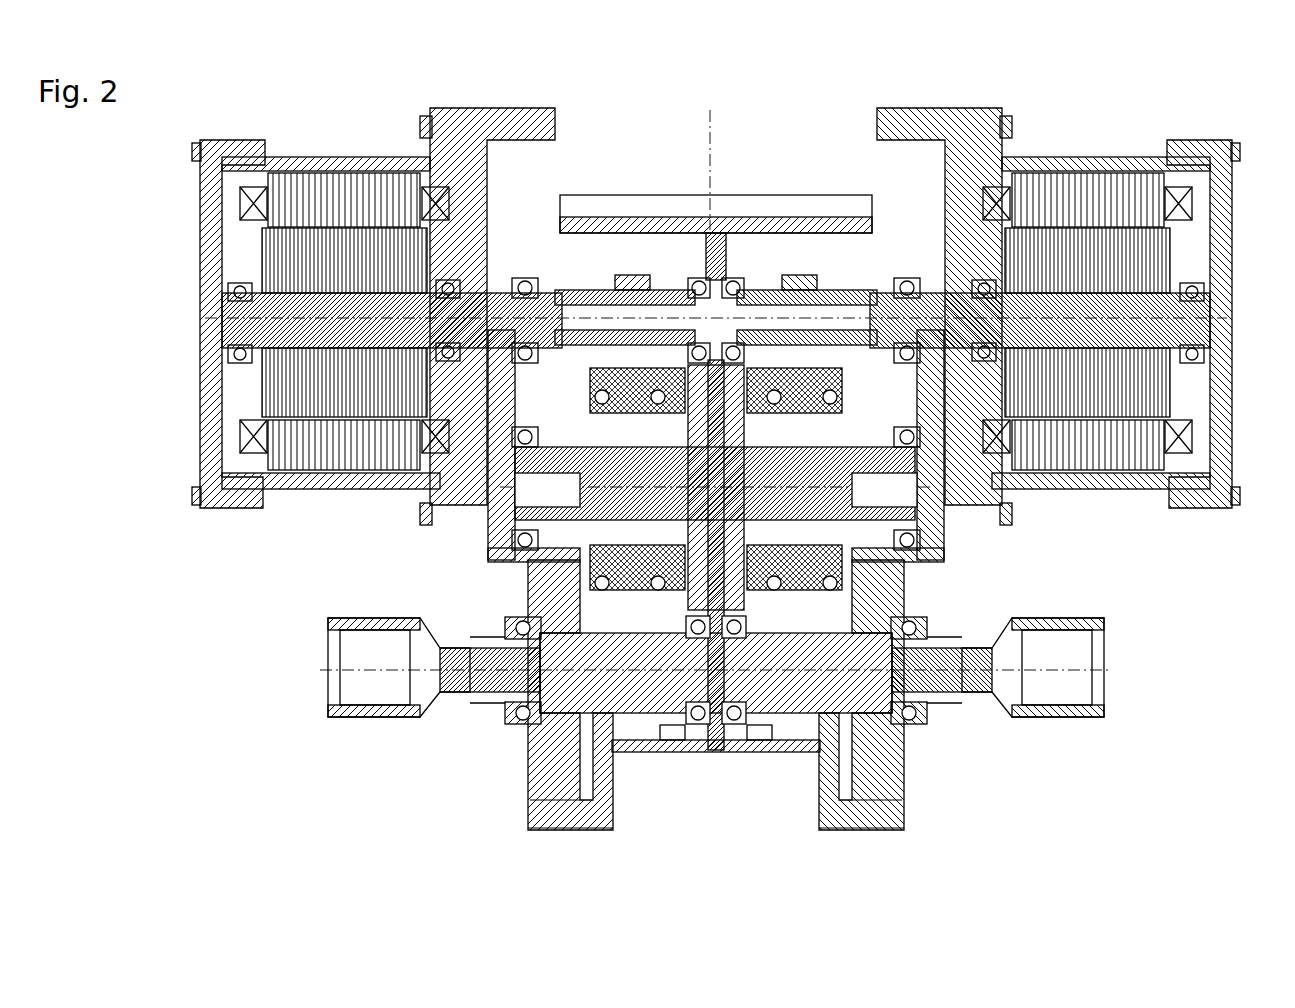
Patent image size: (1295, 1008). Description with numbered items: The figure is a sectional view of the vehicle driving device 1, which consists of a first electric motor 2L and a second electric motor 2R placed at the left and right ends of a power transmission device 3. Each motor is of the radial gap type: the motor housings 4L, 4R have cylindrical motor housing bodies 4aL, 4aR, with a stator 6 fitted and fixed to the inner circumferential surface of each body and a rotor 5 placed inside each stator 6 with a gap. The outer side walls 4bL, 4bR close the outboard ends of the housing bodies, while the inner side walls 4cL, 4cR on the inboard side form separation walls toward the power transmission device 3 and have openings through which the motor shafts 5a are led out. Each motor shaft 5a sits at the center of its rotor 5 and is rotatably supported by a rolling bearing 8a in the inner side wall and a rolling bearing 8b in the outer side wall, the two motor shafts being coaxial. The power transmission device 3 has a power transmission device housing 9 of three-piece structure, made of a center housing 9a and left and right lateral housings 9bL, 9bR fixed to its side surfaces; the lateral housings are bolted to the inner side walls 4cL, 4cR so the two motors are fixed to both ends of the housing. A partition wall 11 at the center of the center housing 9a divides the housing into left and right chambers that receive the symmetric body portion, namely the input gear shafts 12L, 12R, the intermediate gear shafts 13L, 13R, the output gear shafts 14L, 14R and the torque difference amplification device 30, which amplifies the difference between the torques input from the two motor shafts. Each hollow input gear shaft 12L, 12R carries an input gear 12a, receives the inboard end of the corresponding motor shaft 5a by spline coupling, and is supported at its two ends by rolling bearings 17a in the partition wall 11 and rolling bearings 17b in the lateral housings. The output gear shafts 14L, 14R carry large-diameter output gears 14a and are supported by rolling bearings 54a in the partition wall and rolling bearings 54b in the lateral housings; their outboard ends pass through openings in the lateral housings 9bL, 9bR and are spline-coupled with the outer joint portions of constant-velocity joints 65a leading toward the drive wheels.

The vehicle driving device 1 is at (1238, 83).
The first electric motor 2L is at (286, 297).
The second electric motor 2R is at (1142, 296).
The power transmission device 3 is at (713, 100).
The motor housing 4L is at (309, 140).
The motor housing 4R is at (1133, 143).
The cylindrical motor housing body 4aL is at (345, 490).
The cylindrical motor housing body 4aR is at (1087, 490).
The outer side wall 4bL is at (211, 365).
The outer side wall 4bR is at (1222, 375).
The inner side wall 4cL is at (490, 545).
The inner side wall 4cR is at (942, 545).
The rotor 5 is at (272, 262).
The motor shaft 5a is at (226, 322).
The stator 6 is at (370, 200).
The rolling bearing 8a is at (468, 280).
The rolling bearing 8b is at (246, 356).
The power transmission device housing 9 is at (738, 768).
The center housing 9a is at (710, 748).
The left lateral housing 9bL is at (548, 832).
The right lateral housing 9bR is at (885, 832).
The partition wall 11 is at (885, 608).
The left input gear shaft 12L is at (573, 281).
The right input gear shaft 12R is at (858, 278).
The input gear 12a is at (630, 276).
The left intermediate gear shaft 13L is at (442, 480).
The right intermediate gear shaft 13R is at (990, 480).
The left output gear shaft 14L is at (637, 752).
The right output gear shaft 14R is at (790, 752).
The large-diameter output gear 14a is at (536, 797).
The rolling bearing 17a is at (733, 280).
The rolling bearing 17b is at (531, 358).
The torque difference amplification device 30 is at (612, 805).
The rolling bearing 54a is at (670, 745).
The rolling bearing 54b is at (512, 728).
The constant-velocity joint 65a is at (340, 718).